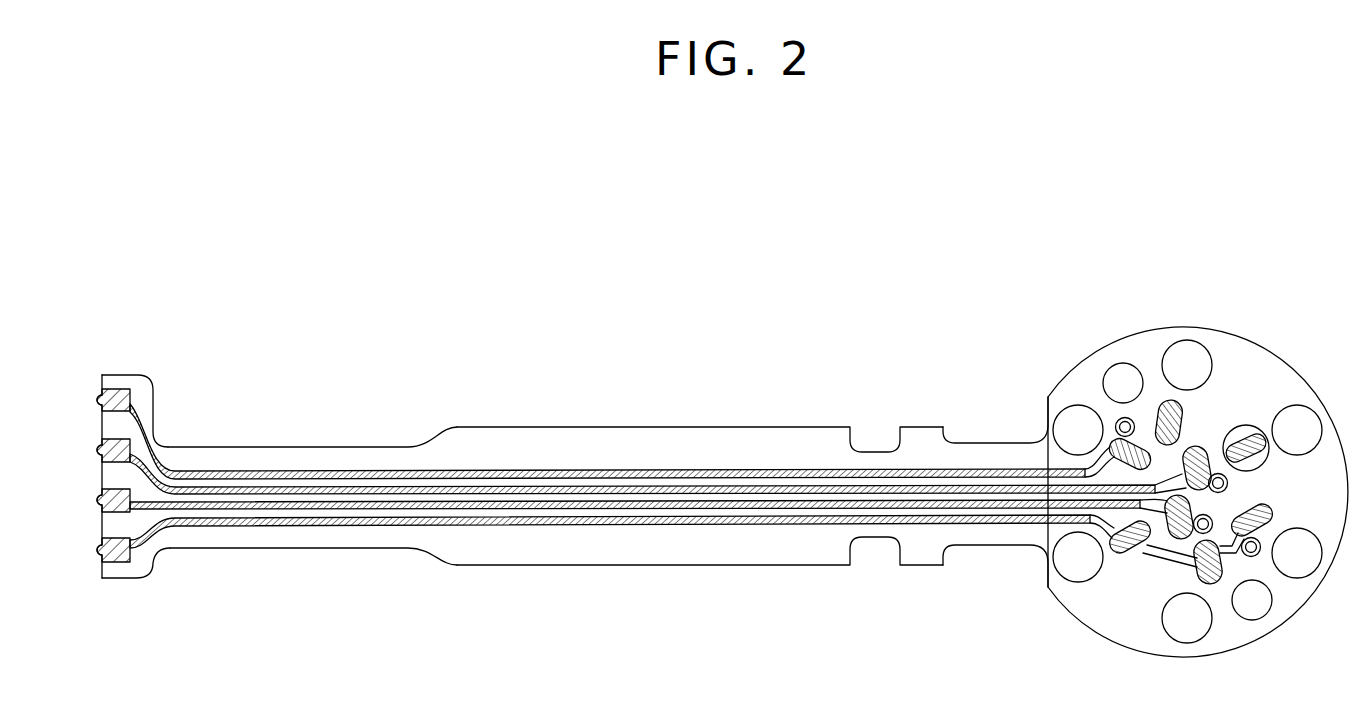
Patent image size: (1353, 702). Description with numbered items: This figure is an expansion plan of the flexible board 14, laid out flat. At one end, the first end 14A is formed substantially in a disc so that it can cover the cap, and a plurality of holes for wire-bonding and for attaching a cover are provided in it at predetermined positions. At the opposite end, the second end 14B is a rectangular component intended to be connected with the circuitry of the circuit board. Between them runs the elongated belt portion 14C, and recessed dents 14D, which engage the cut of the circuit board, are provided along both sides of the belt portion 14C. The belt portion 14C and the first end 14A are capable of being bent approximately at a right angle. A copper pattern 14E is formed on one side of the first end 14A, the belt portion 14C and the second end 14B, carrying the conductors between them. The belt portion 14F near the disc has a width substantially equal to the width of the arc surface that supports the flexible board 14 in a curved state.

The flexible board 14 is at (833, 322).
The first end 14A is at (1260, 355).
The second end 14B is at (136, 380).
The belt portion 14C is at (710, 435).
The recessed dents 14D is at (335, 446).
The copper pattern 14E is at (762, 508).
The belt portion 14F is at (995, 545).